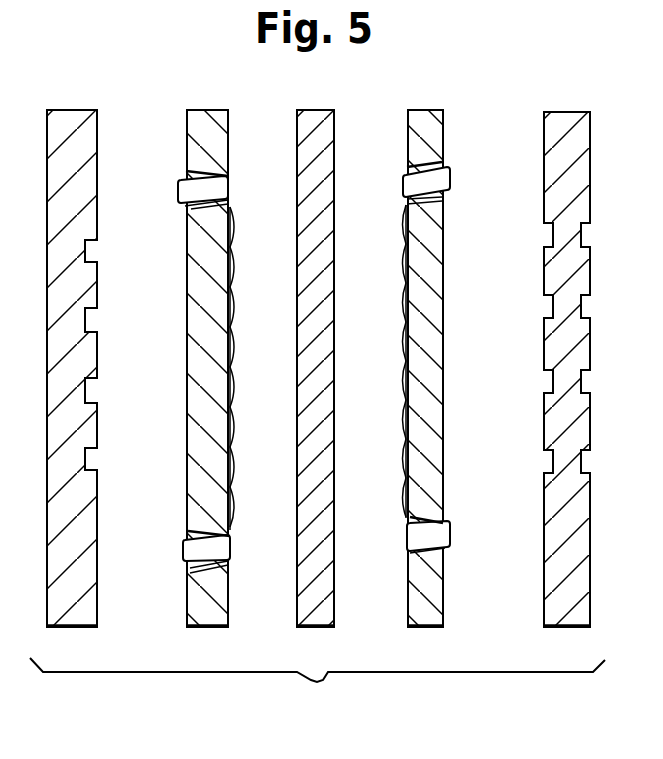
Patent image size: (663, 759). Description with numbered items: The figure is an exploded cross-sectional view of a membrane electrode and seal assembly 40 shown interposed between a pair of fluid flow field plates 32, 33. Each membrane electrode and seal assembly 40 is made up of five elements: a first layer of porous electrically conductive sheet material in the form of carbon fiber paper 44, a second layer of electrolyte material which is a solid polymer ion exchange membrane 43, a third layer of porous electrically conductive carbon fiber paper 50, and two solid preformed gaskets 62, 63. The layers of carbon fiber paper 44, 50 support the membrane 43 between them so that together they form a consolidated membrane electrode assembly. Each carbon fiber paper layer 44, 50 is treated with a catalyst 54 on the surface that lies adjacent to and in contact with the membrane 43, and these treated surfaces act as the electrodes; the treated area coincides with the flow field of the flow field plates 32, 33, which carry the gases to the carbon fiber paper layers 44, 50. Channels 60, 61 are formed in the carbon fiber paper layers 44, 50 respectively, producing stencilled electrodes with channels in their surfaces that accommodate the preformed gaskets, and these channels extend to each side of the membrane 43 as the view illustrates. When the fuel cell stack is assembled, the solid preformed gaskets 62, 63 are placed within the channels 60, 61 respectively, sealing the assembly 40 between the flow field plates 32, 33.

The flow field plate 32 is at (68, 627).
The flow field plate 33 is at (565, 628).
The membrane electrode and seal assembly 40 is at (271, 679).
The solid polymer ion exchange membrane 43 is at (318, 628).
The carbon fiber paper 44 is at (218, 628).
The carbon fiber paper 50 is at (425, 628).
The catalyst 54 is at (231, 213).
The channel 60 is at (185, 205).
The channel 61 is at (448, 192).
The solid preformed gasket 62 is at (179, 179).
The solid preformed gasket 63 is at (450, 176).